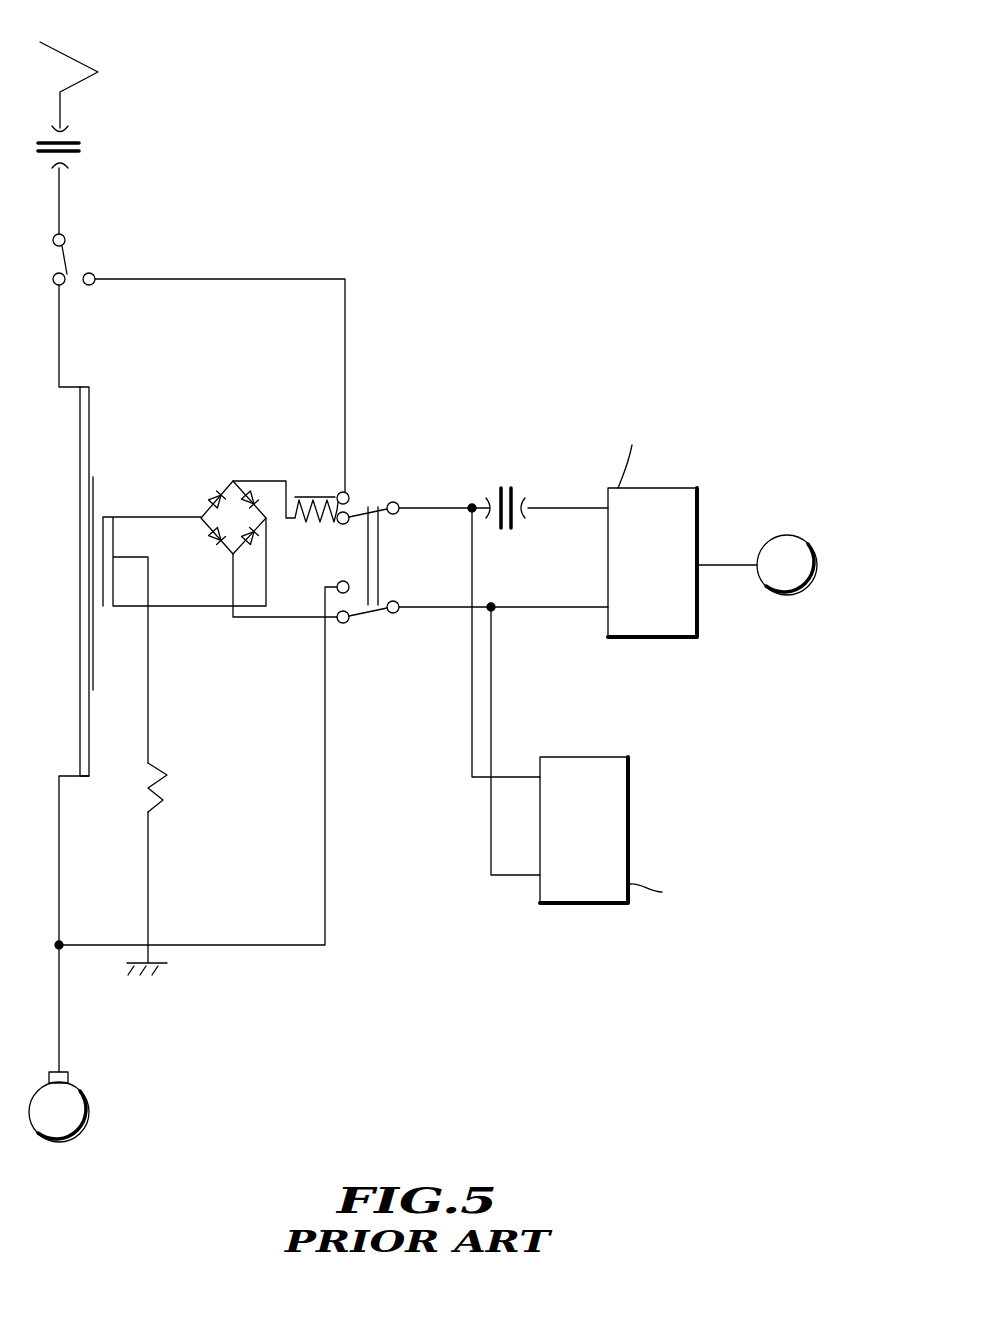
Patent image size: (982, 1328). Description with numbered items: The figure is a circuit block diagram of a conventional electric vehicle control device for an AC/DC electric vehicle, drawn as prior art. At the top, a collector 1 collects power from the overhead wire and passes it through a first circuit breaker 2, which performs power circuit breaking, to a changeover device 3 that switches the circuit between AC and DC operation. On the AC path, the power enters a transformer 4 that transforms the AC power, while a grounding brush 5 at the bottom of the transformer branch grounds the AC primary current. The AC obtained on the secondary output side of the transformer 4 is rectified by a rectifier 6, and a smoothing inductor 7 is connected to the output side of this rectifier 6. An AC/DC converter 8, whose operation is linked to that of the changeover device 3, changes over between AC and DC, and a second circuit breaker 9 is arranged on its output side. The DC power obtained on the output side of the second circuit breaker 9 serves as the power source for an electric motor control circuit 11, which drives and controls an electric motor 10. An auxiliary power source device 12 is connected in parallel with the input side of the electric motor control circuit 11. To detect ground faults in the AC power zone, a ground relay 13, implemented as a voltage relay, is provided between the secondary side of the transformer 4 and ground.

The collector 1 is at (75, 56).
The first circuit breaker 2 is at (80, 144).
The changeover device 3 is at (70, 254).
The transformer 4 is at (92, 406).
The grounding brush 5 is at (57, 1143).
The rectifier 6 is at (228, 481).
The smoothing inductor 7 is at (313, 496).
The AC/DC converter 8 is at (373, 606).
The second circuit breaker 9 is at (507, 488).
The electric motor 10 is at (817, 565).
The electric motor control circuit 11 is at (677, 488).
The auxiliary power source device 12 is at (630, 797).
The ground relay 13 is at (165, 783).